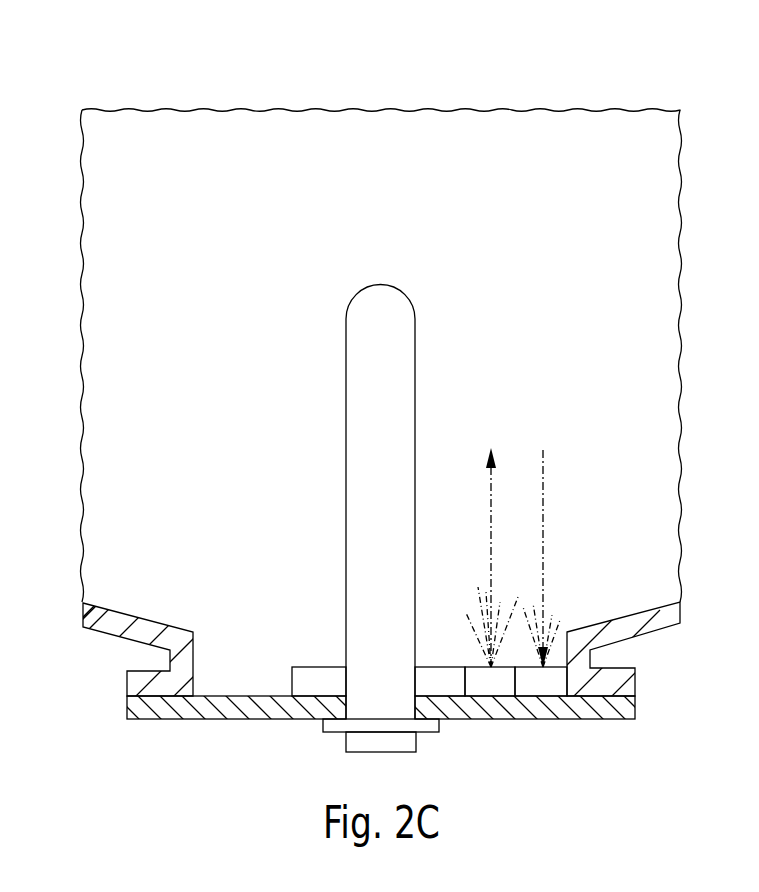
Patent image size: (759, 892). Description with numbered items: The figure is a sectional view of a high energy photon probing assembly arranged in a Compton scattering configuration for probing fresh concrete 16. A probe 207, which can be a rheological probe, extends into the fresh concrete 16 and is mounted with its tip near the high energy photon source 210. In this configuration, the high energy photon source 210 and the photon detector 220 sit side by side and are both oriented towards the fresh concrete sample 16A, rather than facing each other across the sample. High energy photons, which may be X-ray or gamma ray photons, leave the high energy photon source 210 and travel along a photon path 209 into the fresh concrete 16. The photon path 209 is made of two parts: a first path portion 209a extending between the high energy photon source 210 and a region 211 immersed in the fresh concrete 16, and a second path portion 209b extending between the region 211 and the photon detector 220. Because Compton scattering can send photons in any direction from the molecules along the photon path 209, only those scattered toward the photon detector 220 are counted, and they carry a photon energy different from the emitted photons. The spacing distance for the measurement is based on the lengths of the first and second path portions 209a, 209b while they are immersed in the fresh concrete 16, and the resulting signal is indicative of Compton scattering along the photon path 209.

The fresh concrete 16 is at (229, 232).
The region 211 is at (519, 270).
The probe 207 is at (346, 320).
The fresh concrete sample 16A is at (512, 487).
The photon path 209 is at (491, 508).
The first path portion 209a is at (500, 602).
The second path portion 209b is at (552, 615).
The high energy photon source 210 is at (483, 686).
The photon detector 220 is at (545, 686).